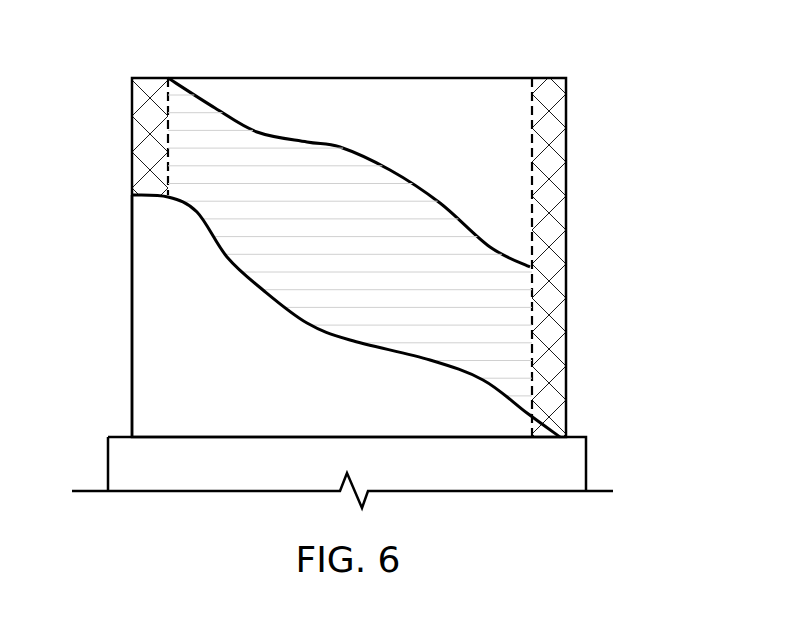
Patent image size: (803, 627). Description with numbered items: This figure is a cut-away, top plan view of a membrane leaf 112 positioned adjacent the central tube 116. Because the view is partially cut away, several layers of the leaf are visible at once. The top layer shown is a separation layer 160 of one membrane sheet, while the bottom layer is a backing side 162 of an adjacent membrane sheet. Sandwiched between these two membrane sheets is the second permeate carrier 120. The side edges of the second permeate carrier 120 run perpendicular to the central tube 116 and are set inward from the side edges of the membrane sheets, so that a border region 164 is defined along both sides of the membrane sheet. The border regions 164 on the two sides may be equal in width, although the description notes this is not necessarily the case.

The membrane leaf 112 is at (594, 404).
The central tube 116 is at (538, 465).
The second permeate carrier 120 is at (513, 318).
The separation layer 160 is at (155, 325).
The backing side 162 is at (515, 113).
The border region 164 is at (145, 140).